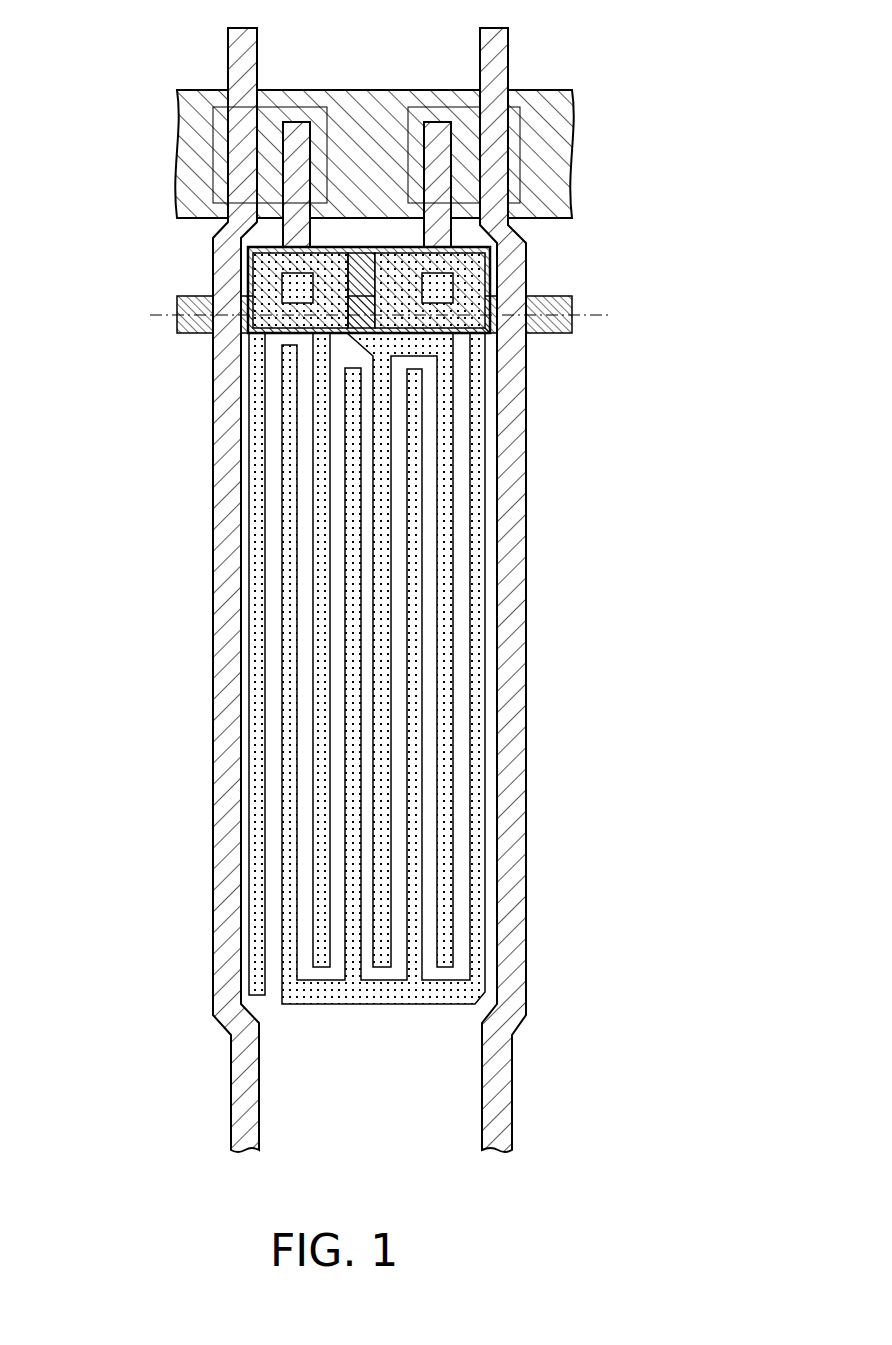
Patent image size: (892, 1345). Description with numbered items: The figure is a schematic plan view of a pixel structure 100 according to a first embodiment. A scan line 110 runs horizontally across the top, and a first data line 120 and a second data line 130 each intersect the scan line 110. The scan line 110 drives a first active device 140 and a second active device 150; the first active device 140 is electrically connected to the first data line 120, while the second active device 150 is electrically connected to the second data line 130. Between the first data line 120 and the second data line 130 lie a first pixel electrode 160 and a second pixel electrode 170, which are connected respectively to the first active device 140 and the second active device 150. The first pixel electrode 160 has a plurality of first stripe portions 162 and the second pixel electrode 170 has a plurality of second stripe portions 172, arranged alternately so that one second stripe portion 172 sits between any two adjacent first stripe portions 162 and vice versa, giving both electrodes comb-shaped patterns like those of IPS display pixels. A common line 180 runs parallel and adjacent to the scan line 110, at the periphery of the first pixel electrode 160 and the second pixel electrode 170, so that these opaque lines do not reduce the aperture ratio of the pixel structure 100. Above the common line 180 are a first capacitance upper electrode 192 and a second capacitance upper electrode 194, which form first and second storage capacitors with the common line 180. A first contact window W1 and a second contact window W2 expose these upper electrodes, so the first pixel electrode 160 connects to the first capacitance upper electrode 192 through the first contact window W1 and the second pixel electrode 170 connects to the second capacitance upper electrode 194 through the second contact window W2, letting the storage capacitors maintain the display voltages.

The pixel structure 100 is at (379, 588).
The scan line 110 is at (553, 146).
The first data line 120 is at (213, 240).
The second data line 130 is at (385, 279).
The first active device 140 is at (300, 106).
The second active device 150 is at (438, 106).
The first pixel electrode 160 is at (281, 664).
The first stripe portions 162 is at (258, 463).
The second pixel electrode 170 is at (459, 590).
The second stripe portions 172 is at (480, 477).
The common line 180 is at (577, 331).
The first capacitance upper electrode 192 is at (242, 318).
The second capacitance upper electrode 194 is at (485, 340).
The first contact window W1 is at (279, 283).
The second contact window W2 is at (458, 277).